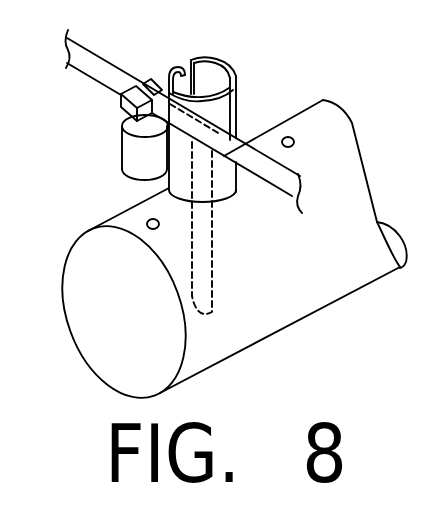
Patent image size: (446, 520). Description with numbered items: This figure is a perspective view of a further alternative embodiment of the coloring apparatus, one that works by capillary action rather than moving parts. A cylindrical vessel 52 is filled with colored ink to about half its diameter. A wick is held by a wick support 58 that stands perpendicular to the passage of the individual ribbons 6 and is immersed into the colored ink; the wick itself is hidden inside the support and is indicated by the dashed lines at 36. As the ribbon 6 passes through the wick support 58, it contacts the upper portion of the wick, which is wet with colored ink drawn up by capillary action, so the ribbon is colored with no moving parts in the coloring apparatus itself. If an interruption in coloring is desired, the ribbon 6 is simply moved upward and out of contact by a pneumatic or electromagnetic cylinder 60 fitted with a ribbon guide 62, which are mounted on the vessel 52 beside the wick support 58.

The ribbon 6 is at (112, 68).
The pin 36 is at (209, 228).
The cylindrical vessel 52 is at (80, 330).
The wick support 58 is at (226, 66).
The pneumatic or electromagnetic cylinder 60 is at (132, 155).
The ribbon guide 62 is at (121, 101).